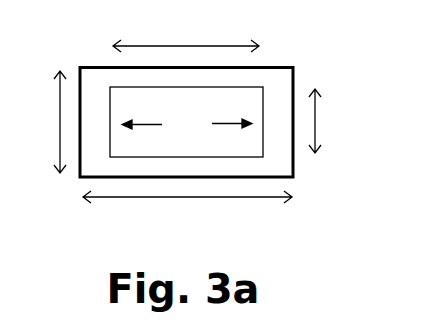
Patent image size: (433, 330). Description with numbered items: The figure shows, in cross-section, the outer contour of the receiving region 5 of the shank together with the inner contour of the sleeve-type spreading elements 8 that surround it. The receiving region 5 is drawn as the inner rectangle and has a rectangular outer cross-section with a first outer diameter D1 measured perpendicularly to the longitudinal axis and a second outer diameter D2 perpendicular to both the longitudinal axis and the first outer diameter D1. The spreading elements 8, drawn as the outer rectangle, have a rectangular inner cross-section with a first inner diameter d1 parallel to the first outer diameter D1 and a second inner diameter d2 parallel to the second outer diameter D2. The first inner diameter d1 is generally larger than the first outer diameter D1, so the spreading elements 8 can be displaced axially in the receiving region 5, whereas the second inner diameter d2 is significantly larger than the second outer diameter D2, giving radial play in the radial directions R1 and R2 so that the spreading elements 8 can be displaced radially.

The receiving region 5 is at (254, 87).
The spreading elements 8 is at (293, 77).
The first outer diameter D1 is at (331, 121).
The second outer diameter D2 is at (186, 29).
The first inner diameter d1 is at (44, 122).
The second inner diameter d2 is at (187, 214).
The radial direction R1 is at (142, 112).
The radial direction R2 is at (228, 111).